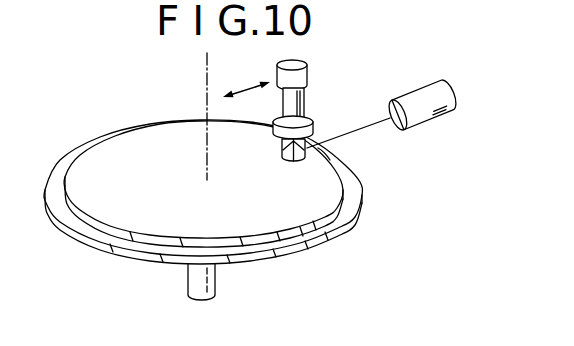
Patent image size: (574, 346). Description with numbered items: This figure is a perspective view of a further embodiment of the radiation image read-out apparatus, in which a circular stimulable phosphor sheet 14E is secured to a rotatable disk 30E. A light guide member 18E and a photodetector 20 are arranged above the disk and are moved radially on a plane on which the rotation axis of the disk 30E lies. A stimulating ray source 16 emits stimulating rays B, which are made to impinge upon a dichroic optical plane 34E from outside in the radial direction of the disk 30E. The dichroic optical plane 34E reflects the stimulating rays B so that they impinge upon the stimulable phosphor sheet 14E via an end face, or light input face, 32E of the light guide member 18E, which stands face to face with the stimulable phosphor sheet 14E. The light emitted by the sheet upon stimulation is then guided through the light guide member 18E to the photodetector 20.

The circular stimulable phosphor sheet 14E is at (236, 210).
The stimulating ray source 16 is at (449, 83).
The light guide member 18E is at (282, 152).
The photodetector 20 is at (290, 105).
The rotatable disk 30E is at (362, 217).
The end face (light input face) 32E is at (294, 164).
The dichroic optical plane 34E is at (320, 149).
The stimulating rays B is at (349, 128).